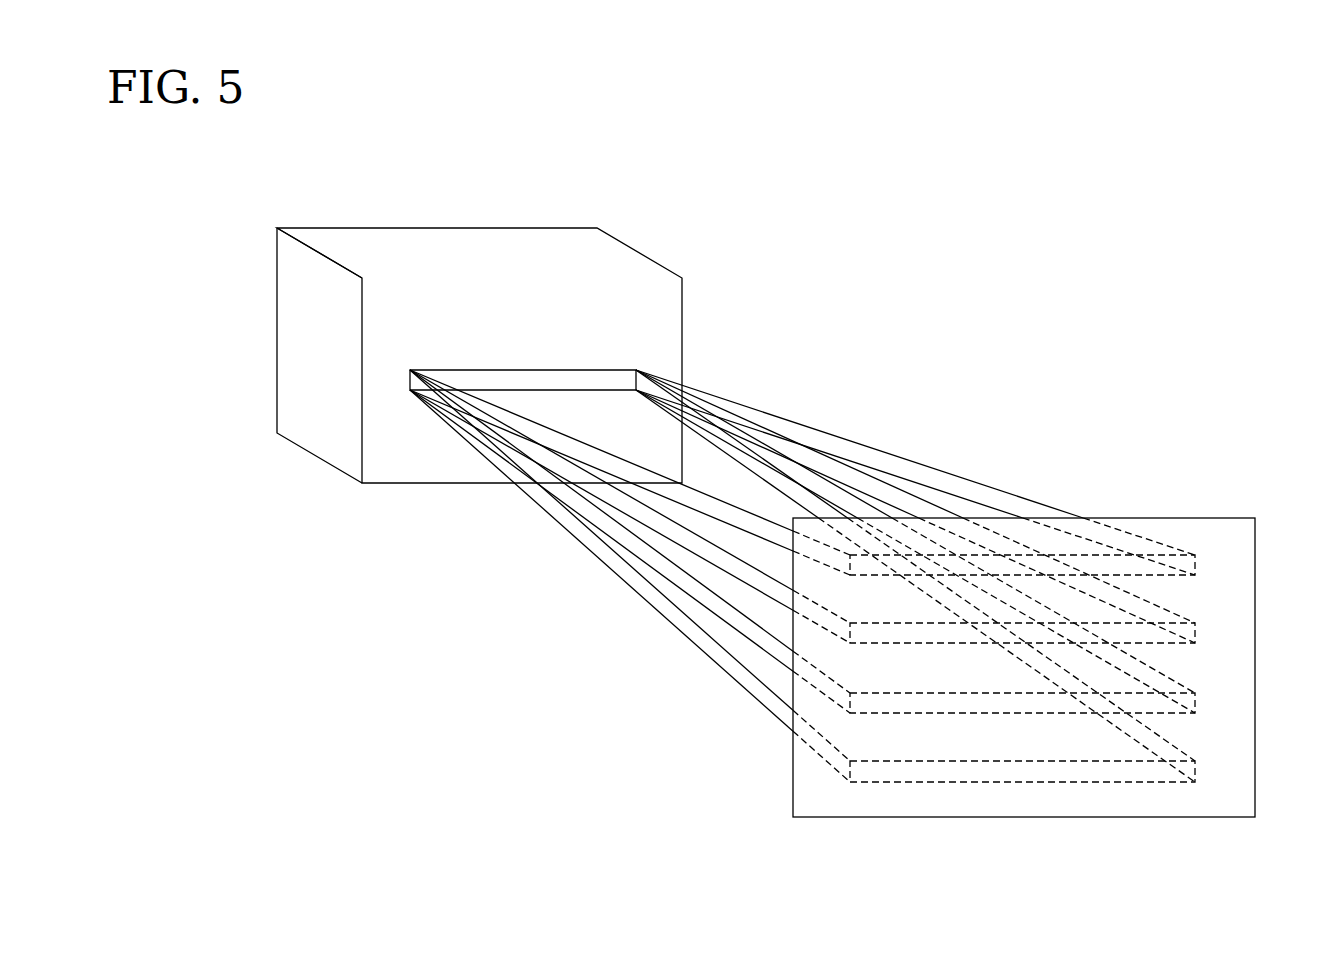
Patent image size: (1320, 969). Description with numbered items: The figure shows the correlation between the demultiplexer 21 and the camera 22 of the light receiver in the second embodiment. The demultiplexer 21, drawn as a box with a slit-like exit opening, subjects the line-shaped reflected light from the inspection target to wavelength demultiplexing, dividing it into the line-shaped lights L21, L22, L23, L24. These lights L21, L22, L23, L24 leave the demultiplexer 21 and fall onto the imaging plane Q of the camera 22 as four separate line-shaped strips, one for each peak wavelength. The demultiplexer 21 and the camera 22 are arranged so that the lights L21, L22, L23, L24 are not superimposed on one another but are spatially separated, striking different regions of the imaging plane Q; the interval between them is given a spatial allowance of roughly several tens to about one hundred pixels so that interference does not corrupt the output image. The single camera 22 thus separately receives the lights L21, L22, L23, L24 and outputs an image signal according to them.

The demultiplexer 21 is at (513, 246).
The camera 22 is at (1229, 506).
The light L21 is at (678, 493).
The light L22 is at (697, 545).
The light L23 is at (710, 600).
The light L24 is at (728, 662).
The imaging plane Q is at (810, 790).